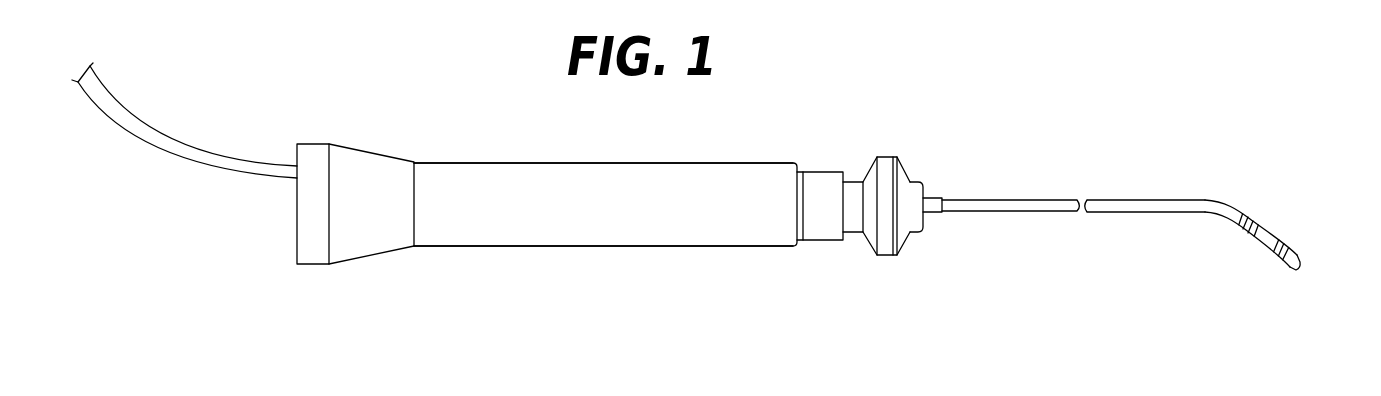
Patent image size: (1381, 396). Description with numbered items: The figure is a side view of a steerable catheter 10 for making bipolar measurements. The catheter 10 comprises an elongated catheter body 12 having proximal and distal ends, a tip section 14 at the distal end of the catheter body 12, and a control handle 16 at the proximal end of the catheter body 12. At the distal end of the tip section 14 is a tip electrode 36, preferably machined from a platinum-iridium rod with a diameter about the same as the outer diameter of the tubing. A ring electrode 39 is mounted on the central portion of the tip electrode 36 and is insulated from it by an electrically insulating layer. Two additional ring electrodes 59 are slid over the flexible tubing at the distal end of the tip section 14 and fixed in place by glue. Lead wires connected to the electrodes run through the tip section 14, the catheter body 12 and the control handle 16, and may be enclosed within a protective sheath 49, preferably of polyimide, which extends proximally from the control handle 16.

The catheter 10 is at (735, 152).
The catheter body 12 is at (1023, 207).
The tip section 14 is at (1223, 216).
The control handle 16 is at (500, 185).
The tip electrode 36 is at (1301, 263).
The ring electrode 39 is at (1283, 260).
The protective sheath 49 is at (115, 100).
The additional ring electrodes 59 is at (1261, 227).